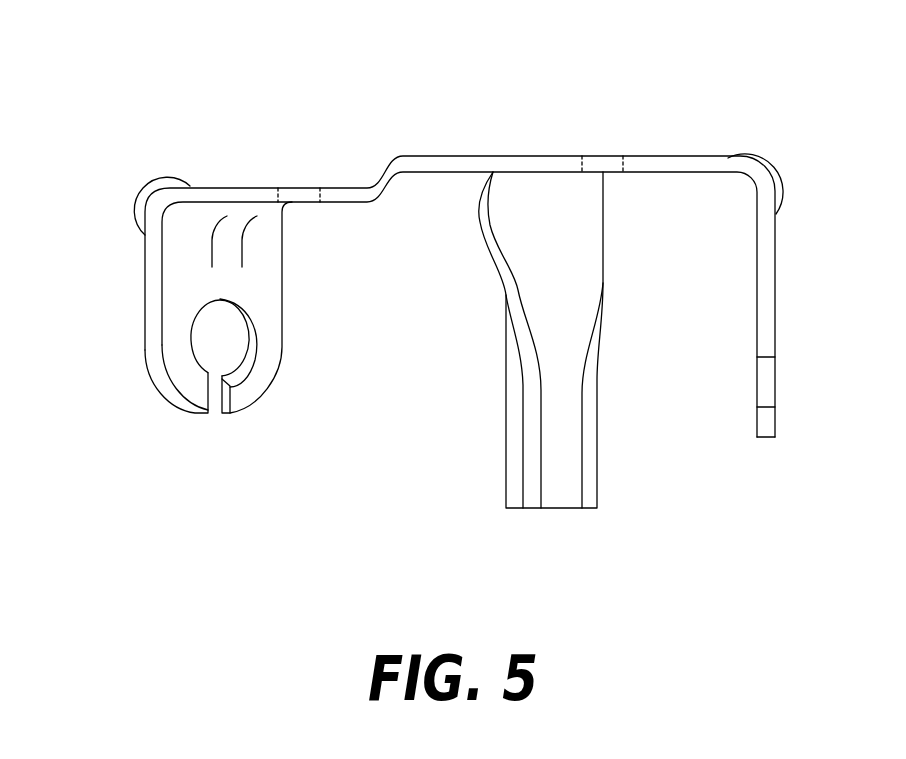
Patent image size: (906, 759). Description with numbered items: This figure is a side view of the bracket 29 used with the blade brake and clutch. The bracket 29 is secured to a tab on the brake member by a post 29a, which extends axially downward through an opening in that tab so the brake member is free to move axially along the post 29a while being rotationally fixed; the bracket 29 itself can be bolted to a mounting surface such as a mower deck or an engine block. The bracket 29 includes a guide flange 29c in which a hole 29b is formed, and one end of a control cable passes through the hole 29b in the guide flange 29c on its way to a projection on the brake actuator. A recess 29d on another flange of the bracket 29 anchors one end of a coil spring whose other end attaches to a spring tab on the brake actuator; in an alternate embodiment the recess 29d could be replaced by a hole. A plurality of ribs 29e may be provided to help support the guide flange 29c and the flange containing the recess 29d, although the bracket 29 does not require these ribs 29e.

The bracket 29 is at (734, 94).
The post 29a is at (552, 508).
The hole 29b is at (193, 343).
The guide flange 29c is at (145, 282).
The recess 29d is at (757, 393).
The ribs 29e is at (152, 190).